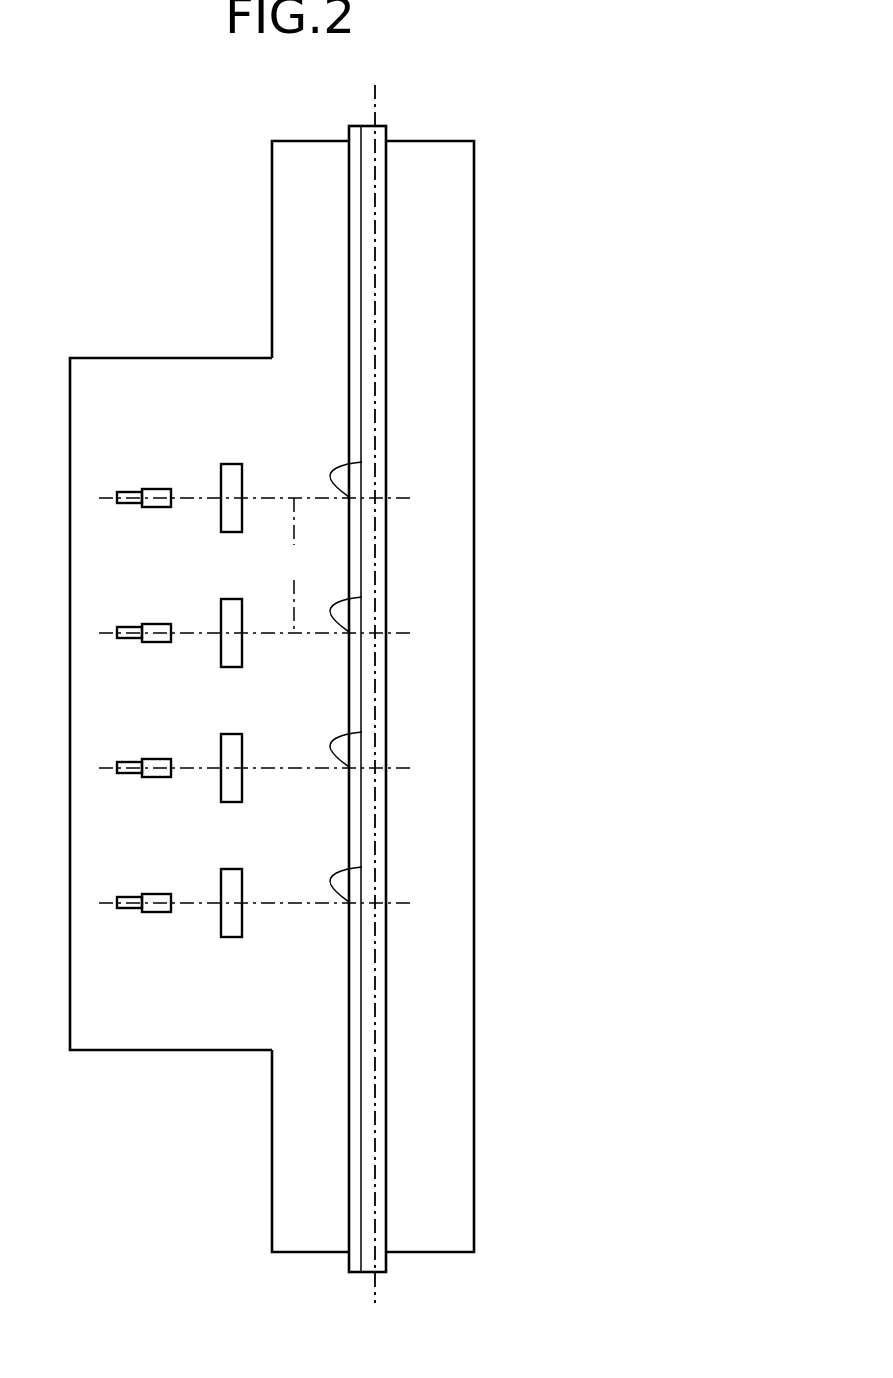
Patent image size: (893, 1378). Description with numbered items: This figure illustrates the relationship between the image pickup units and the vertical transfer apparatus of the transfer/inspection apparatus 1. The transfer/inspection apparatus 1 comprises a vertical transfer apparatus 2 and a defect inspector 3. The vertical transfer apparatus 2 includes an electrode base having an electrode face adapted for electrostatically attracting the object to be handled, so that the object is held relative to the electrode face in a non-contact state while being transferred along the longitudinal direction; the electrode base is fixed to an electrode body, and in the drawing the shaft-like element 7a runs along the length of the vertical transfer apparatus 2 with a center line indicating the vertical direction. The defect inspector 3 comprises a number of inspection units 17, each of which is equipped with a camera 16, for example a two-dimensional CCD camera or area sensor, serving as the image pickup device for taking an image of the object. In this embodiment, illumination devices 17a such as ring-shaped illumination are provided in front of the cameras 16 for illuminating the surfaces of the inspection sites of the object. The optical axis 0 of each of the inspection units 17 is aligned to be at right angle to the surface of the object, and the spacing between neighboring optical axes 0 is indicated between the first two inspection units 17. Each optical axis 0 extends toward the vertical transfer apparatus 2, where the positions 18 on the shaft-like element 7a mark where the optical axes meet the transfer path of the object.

The transfer/inspection apparatus 1 is at (479, 122).
The vertical transfer apparatus 2 is at (477, 395).
The defect inspector 3 is at (103, 357).
The rotary shaft 7a is at (352, 200).
The camera 16 is at (129, 492).
The inspection unit 17 is at (138, 665).
The illumination device 17a is at (233, 466).
The detection point on shaft 18 is at (362, 462).
The optical axis 0 is at (294, 565).